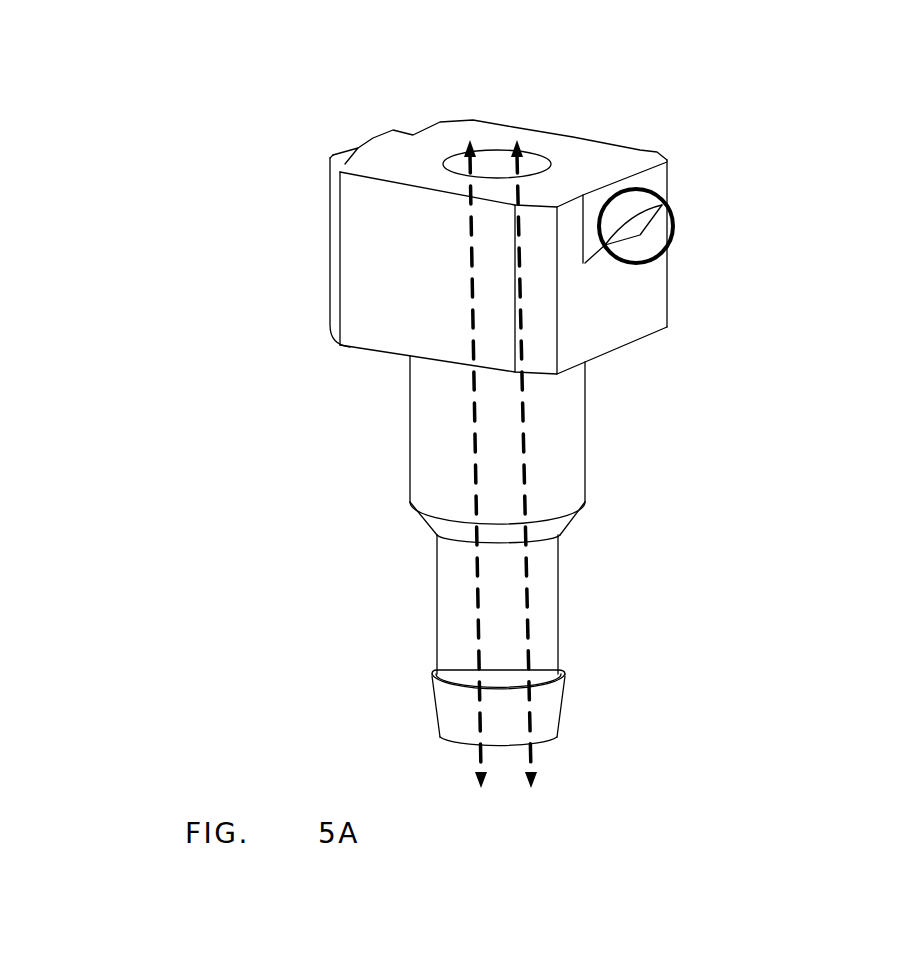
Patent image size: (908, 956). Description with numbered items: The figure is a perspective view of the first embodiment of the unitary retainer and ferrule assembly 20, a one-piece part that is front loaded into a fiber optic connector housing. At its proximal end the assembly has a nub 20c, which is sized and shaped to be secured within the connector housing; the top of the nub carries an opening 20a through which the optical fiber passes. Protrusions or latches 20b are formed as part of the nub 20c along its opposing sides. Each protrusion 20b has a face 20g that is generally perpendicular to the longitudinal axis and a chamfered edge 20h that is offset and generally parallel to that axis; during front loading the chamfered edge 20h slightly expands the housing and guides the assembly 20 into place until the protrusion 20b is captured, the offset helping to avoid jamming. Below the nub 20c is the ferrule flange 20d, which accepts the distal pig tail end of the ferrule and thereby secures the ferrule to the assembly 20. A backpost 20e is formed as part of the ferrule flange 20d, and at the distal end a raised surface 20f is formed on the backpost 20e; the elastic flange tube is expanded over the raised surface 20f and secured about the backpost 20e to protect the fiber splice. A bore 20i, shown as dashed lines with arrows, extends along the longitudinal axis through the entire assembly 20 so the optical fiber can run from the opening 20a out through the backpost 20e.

The unitary retainer and ferrule assembly 20 is at (118, 90).
The opening 20a is at (493, 141).
The protrusion 20b is at (323, 136).
The nub 20c is at (352, 308).
The ferrule flange 20d is at (577, 444).
The backpost 20e is at (557, 588).
The raised surface 20f is at (452, 718).
The face 20g is at (366, 134).
The chamfered edge 20h is at (670, 270).
The bore 20i is at (508, 782).